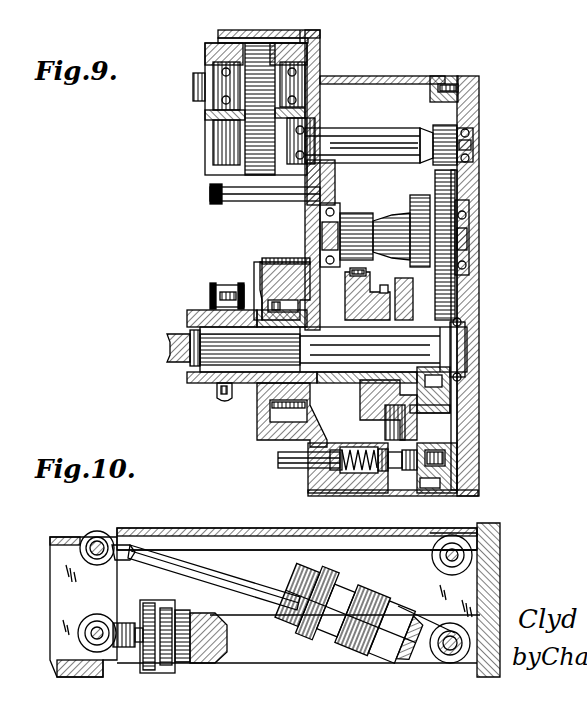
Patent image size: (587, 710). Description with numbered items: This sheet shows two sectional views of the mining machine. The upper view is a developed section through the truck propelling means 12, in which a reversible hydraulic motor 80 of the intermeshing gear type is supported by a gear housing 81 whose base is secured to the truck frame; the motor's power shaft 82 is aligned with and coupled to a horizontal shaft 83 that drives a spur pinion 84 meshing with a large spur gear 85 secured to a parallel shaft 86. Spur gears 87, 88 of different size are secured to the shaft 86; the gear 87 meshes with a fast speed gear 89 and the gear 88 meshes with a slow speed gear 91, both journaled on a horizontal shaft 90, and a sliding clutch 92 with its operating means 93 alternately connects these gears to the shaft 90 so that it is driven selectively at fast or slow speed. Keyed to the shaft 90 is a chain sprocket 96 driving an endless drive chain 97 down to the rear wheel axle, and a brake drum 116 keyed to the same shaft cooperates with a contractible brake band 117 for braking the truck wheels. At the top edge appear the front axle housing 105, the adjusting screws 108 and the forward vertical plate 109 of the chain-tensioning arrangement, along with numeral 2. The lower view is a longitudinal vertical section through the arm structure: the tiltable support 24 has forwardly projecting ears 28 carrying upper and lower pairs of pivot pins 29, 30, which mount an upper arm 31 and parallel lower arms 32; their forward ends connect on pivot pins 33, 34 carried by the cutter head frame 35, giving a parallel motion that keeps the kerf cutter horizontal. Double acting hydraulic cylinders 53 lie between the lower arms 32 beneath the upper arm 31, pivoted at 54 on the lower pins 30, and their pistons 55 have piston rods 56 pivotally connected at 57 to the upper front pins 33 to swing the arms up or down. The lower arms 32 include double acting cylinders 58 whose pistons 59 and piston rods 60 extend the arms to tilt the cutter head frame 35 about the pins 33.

In FIG. 9, the machine frame 2 is at (130, 0).
In FIG. 9, the adjusting screws 108 is at (489, 0).
In FIG. 9, the axle housing 105 is at (439, 9).
In FIG. 9, the forward vertical plate 109 is at (538, 0).
In FIG. 9, the truck propelling means 12 is at (302, 29).
In FIG. 9, the reversible hydraulic motor 80 is at (268, 30).
In FIG. 9, the gear housing 81 is at (378, 77).
In FIG. 9, the power shaft 82 is at (299, 142).
In FIG. 9, the horizontal shaft 83 is at (381, 128).
In FIG. 9, the spur pinion 84 is at (447, 150).
In FIG. 9, the large spur gear 85 is at (440, 302).
In FIG. 9, the parallel shaft 86 is at (457, 240).
In FIG. 9, the spur gear 87 is at (417, 195).
In FIG. 9, the spur gear 88 is at (358, 212).
In FIG. 9, the fast speed gear 89 is at (452, 417).
In FIG. 9, the horizontal shaft 90 is at (447, 355).
In FIG. 9, the slow speed gear 91 is at (305, 468).
In FIG. 9, the sliding clutch 92 is at (384, 292).
In FIG. 9, the operating means 93 is at (366, 478).
In FIG. 9, the chain sprocket 96 is at (218, 396).
In FIG. 9, the endless drive chain 97 is at (222, 284).
In FIG. 9, the brake drum 116 is at (258, 266).
In FIG. 9, the contractible brake band 117 is at (275, 260).
In FIG. 10, the tiltable support 24 is at (494, 536).
In FIG. 10, the forwardly projecting ears 28 is at (466, 588).
In FIG. 10, the pivot pins 29 is at (455, 550).
In FIG. 10, the pivot pins 30 is at (456, 640).
In FIG. 10, the upper arm 31 is at (233, 530).
In FIG. 10, the lower arms 32 is at (278, 650).
In FIG. 10, the pivot pins 33 is at (95, 540).
In FIG. 10, the pivot pins 34 is at (97, 630).
In FIG. 10, the cutter head frame 35 is at (52, 537).
In FIG. 10, the double acting hydraulic cylinders 53 is at (372, 658).
In FIG. 10, the pivotal mounting 54 is at (452, 655).
In FIG. 10, the pistons 55 is at (372, 592).
In FIG. 10, the piston rods 56 is at (262, 590).
In FIG. 10, the pivotal connection 57 is at (110, 545).
In FIG. 10, the double acting cylinders 58 is at (222, 663).
In FIG. 10, the pistons 59 is at (185, 673).
In FIG. 10, the piston rods 60 is at (137, 650).